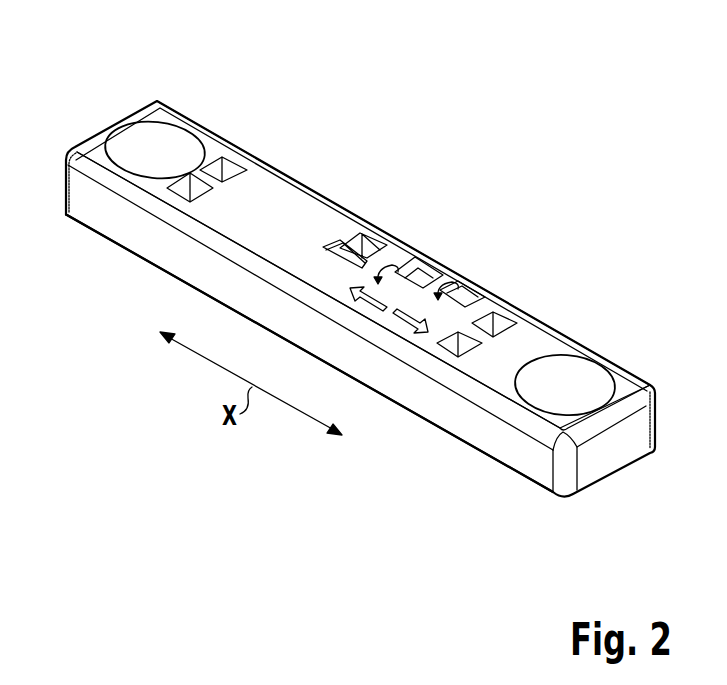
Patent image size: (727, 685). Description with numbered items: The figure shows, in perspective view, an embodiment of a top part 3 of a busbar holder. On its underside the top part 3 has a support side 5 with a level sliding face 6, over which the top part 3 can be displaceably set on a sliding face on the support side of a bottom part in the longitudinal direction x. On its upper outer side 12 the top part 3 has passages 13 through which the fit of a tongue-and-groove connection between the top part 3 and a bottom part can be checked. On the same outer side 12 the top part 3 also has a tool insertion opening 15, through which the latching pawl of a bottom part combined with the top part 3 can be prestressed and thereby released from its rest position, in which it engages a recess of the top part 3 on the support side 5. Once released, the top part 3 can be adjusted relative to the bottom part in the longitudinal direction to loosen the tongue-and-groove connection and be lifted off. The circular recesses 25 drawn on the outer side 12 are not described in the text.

The top part 3 is at (351, 260).
The support side 5 is at (93, 237).
The sliding face 6 is at (153, 268).
The upper outer side 12 is at (538, 347).
The passages 13 is at (227, 172).
The tool insertion opening 15 is at (373, 247).
The circular recesses 25 is at (158, 150).